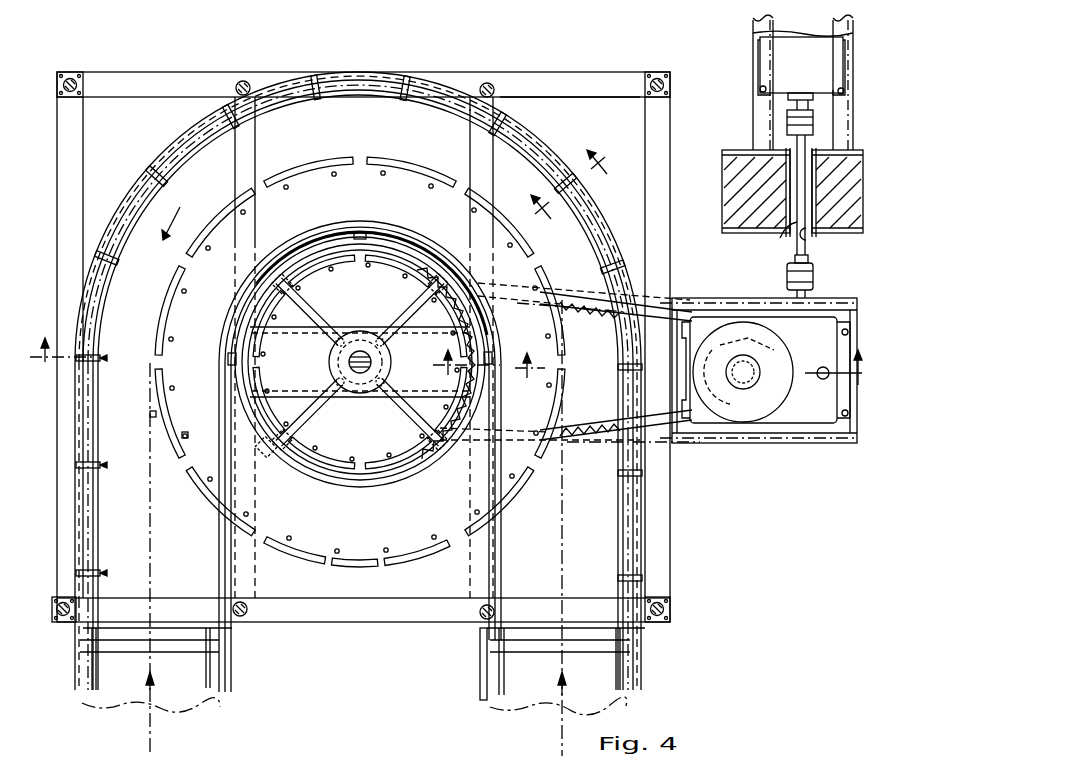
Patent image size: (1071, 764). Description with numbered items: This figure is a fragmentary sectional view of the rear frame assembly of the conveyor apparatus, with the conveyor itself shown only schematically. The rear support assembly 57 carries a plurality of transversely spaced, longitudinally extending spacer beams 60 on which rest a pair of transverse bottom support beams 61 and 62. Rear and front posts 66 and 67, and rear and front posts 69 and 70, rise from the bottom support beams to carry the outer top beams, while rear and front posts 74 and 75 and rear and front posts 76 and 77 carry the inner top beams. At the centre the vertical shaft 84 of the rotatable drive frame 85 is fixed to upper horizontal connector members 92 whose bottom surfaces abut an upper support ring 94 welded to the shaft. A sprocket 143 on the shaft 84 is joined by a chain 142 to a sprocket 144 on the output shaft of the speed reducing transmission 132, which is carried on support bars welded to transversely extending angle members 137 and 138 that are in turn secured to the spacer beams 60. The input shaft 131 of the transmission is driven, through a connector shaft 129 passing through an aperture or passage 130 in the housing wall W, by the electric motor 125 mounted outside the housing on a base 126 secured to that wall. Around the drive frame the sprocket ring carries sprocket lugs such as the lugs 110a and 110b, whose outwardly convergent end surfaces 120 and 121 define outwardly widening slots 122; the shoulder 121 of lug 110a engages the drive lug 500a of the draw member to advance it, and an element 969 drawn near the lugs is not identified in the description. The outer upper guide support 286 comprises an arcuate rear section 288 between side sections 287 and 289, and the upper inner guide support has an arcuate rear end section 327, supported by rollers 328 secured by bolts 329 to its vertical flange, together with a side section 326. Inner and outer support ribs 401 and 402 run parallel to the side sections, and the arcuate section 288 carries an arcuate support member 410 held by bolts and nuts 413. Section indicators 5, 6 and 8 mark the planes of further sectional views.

The rear support assembly 57 is at (152, 76).
The bottom support beam 61 is at (577, 88).
The bottom support beam 62 is at (378, 623).
The spacer beams 60 is at (83, 133).
The rear post 66 is at (78, 76).
The rear vertical post 69 is at (672, 62).
The front post 67 is at (58, 600).
The front vertical post 70 is at (670, 619).
The rear post 74 is at (243, 80).
The rear post 76 is at (492, 82).
The front post 75 is at (240, 620).
The front post 77 is at (476, 622).
The arcuate rear section 288 is at (396, 72).
The support member 410 is at (104, 292).
The side section 289 is at (74, 683).
The side section 287 is at (642, 683).
The slots 122 is at (386, 566).
The end surface 120 is at (346, 567).
The shoulder 121 is at (327, 564).
The sprocket lug 110b is at (160, 342).
The sprocket lug 110a is at (160, 396).
The drive lug 500a is at (150, 415).
The mounting block 969 is at (182, 436).
The side section 329 is at (488, 350).
The side section 326 is at (480, 678).
The outer upper guide support 286 is at (644, 657).
The outer support ribs 402 is at (97, 684).
The inner support ribs 401 is at (206, 683).
The vertical shaft 84 is at (362, 344).
The upper support ring 94 is at (386, 360).
The upper horizontal connector members 92 is at (302, 298).
The sprocket 143 is at (420, 468).
The rotatable drive frame 85 is at (280, 460).
The chain 142 is at (396, 262).
The rollers 328 is at (372, 234).
The arcuate rear end section 327 is at (360, 230).
The nuts 413 is at (622, 366).
The section line 5 is at (446, 370).
The section line 6 is at (488, 371).
The section line 8 is at (574, 197).
The angle member 137 is at (688, 304).
The angle member 138 is at (746, 438).
The speed reducing device 132 is at (800, 424).
The sprocket 144 is at (743, 372).
The input shaft 131 is at (794, 296).
The connector shaft 129 is at (772, 195).
The passage 130 is at (808, 236).
The wall W is at (722, 145).
The electric motor 125 is at (790, 52).
The base 126 is at (762, 125).